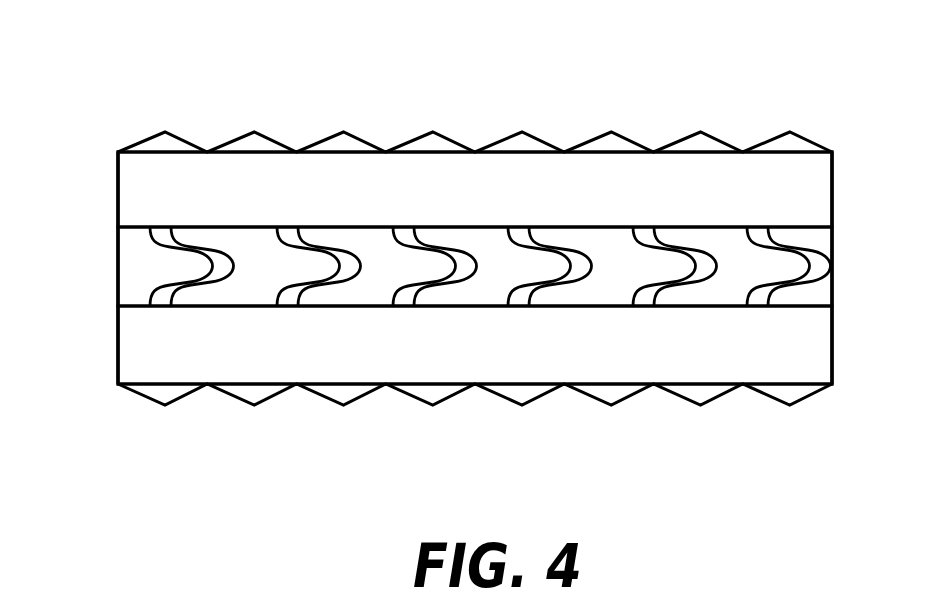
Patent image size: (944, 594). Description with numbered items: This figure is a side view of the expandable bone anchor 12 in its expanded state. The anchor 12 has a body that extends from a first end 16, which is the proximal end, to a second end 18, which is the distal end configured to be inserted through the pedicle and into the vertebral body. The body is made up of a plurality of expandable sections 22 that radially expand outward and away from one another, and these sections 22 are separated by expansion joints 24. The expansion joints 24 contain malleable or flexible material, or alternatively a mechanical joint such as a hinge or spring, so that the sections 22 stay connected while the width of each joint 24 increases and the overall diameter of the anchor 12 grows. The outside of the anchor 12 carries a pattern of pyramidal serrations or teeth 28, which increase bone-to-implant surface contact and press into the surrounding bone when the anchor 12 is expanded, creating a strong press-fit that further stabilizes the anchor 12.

The expandable bone anchor 12 is at (214, 98).
The first end 16 is at (832, 175).
The second end 18 is at (118, 170).
The expandable sections 22 is at (382, 167).
The expansion joints 24 is at (145, 261).
The teeth 28 is at (343, 132).